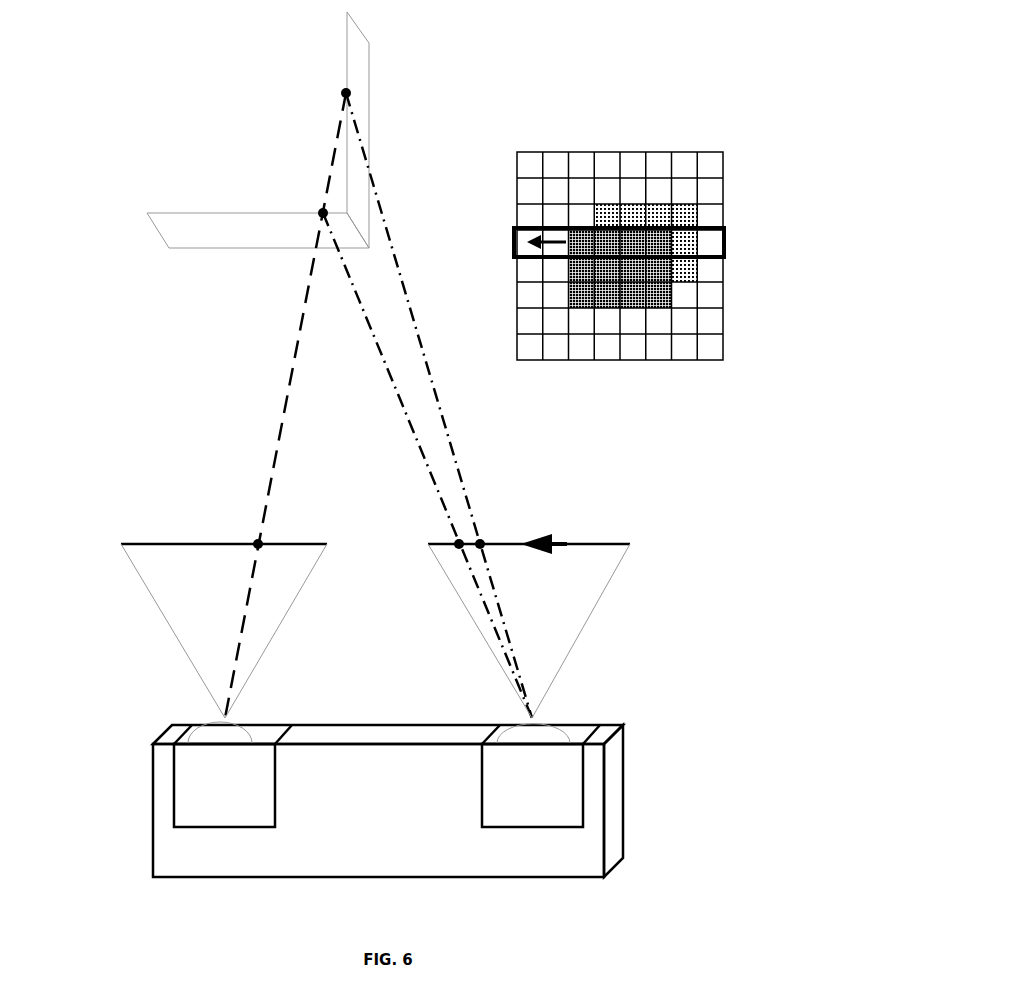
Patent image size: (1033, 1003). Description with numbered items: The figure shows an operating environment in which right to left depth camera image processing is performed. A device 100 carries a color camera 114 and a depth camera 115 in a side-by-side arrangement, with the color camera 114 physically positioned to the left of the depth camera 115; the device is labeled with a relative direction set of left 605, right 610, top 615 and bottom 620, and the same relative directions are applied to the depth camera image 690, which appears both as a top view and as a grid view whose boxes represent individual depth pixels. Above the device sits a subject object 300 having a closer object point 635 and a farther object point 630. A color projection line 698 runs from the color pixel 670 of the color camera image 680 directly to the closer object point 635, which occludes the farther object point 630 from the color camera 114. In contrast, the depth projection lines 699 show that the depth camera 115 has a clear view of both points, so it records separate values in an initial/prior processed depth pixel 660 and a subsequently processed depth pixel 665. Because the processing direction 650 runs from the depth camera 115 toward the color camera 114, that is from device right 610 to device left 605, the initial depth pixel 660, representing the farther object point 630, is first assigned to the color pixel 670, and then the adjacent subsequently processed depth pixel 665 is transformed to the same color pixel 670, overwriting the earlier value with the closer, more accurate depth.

The subject object 300 is at (258, 130).
The farther object point 630 is at (354, 92).
The closer object point 635 is at (316, 215).
The color projection line 698 is at (291, 390).
The depth projection lines 699 is at (380, 348).
The color camera image 680 is at (162, 541).
The color pixel 670 is at (259, 540).
The subsequently processed depth pixel 665 is at (453, 539).
The initial/prior processed depth pixel 660 is at (482, 539).
The depth camera image 690 is at (628, 538).
The processing direction 650 is at (726, 240).
The left 605 is at (413, 577).
The right 610 is at (625, 763).
The top 615 is at (123, 857).
The bottom 620 is at (580, 741).
The device 100 is at (388, 801).
The color camera 114 is at (233, 774).
The depth camera 115 is at (541, 775).